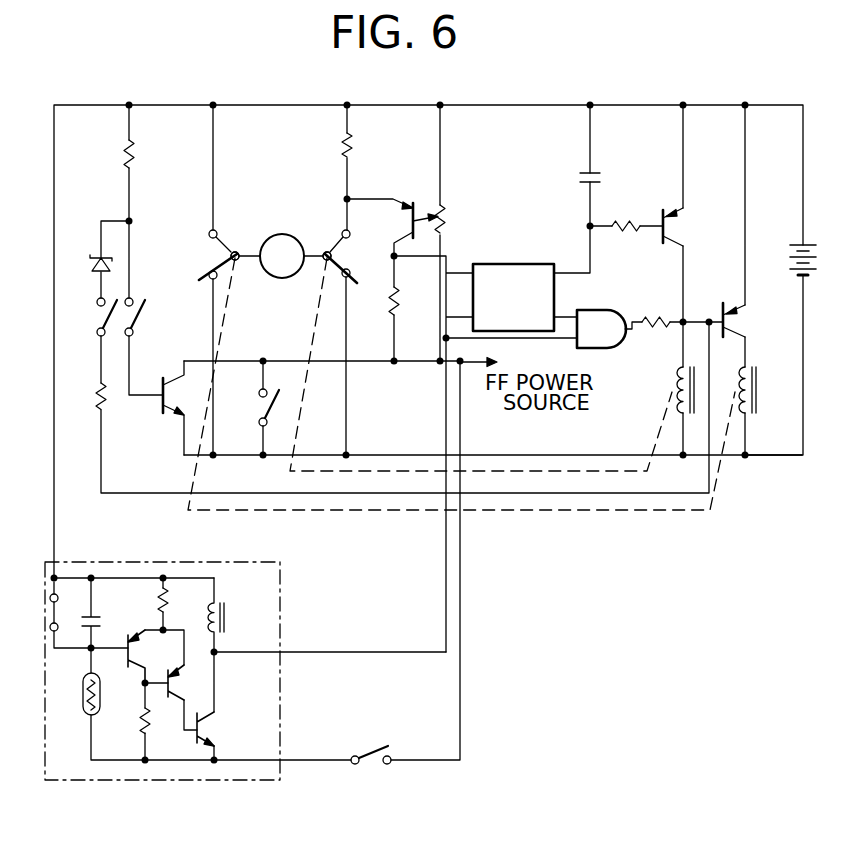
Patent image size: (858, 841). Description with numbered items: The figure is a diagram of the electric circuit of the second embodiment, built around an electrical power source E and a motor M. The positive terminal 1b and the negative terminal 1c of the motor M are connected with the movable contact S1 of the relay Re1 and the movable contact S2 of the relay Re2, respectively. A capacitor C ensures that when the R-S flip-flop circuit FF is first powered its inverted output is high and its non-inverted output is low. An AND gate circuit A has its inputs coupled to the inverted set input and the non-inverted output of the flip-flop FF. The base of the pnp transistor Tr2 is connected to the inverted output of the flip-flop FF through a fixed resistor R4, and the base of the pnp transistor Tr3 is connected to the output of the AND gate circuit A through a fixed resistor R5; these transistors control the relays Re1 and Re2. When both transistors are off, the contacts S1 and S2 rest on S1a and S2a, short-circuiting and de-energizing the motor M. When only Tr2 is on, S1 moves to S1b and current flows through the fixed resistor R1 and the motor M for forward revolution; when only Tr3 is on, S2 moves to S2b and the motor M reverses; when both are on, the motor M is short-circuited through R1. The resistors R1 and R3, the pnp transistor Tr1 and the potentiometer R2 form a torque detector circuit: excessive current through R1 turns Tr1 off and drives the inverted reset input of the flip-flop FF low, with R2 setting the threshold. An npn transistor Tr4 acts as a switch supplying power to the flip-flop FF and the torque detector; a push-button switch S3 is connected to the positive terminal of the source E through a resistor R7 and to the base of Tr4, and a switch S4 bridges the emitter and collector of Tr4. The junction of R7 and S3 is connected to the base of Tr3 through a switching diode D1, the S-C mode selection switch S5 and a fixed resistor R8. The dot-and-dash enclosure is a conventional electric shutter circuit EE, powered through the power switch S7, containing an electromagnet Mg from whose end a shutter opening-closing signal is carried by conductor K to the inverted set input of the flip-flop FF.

The resistor R7 is at (112, 155).
The switching diode D1 is at (91, 260).
The relay contact S2b is at (209, 232).
The movable contact of relay Re2 S2 is at (226, 256).
The negative terminal of the motor 1c is at (239, 243).
The relay contact S2a is at (210, 278).
The S-C mode selection switch S5 is at (97, 307).
The push-button switch S3 is at (134, 322).
The resistor R8 is at (81, 395).
The npn transistor Tr4 is at (162, 409).
The switch S4 is at (248, 404).
The resistor R1 is at (333, 145).
The relay contact S1b is at (340, 230).
The movable contact of relay Re1 S1 is at (336, 258).
The positive terminal of the motor 1b is at (315, 242).
The relay contact S1a is at (348, 278).
The motor M is at (282, 256).
The pnp transistor Tr1 is at (407, 222).
The resistor R3 is at (398, 300).
The potentiometer R2 is at (448, 220).
The capacitor C is at (579, 178).
The resistor R4 is at (627, 222).
The R-S flip-flop circuit FF is at (523, 263).
The pnp transistor Tr2 is at (669, 219).
The electrical power source E is at (789, 257).
The resistor R5 is at (652, 318).
The AND gate circuit A is at (620, 343).
The pnp transistor Tr3 is at (730, 317).
The relay Re1 is at (676, 389).
The relay Re2 is at (747, 413).
The electromagnet Mg is at (210, 613).
The conductor K is at (361, 652).
The electric shutter circuit EE is at (281, 683).
The power switch S7 is at (372, 768).